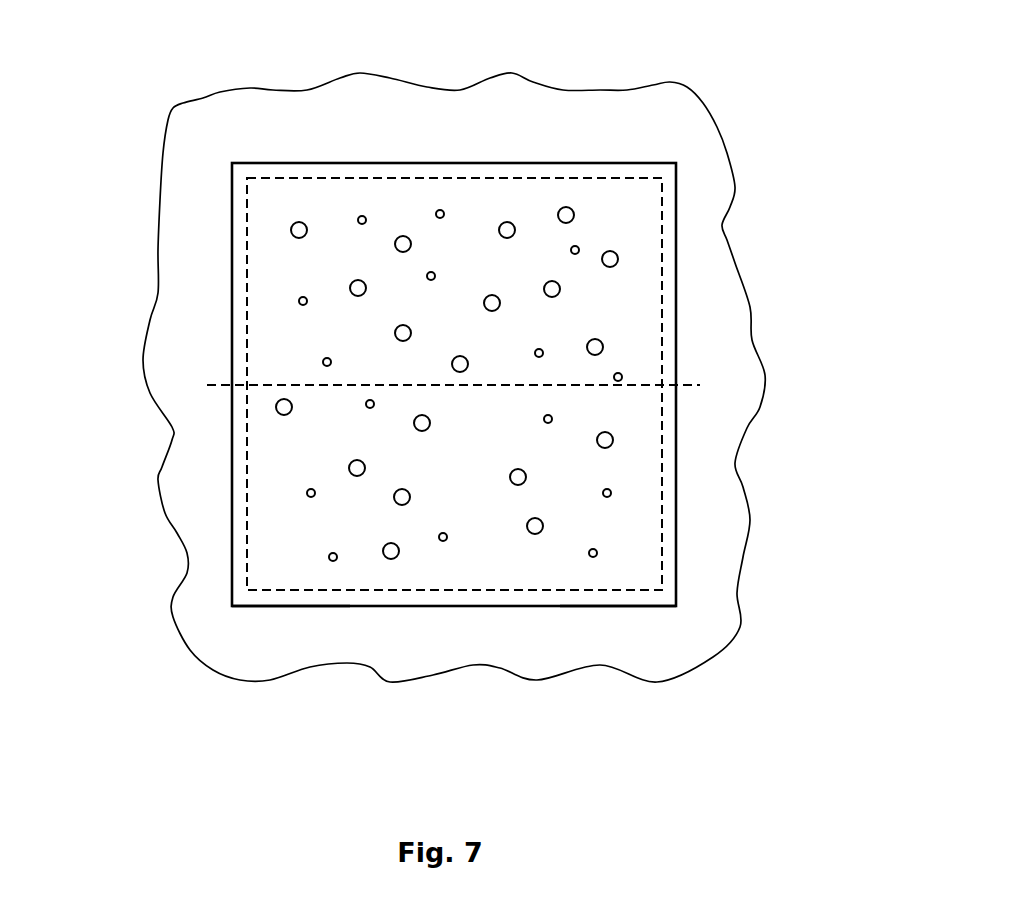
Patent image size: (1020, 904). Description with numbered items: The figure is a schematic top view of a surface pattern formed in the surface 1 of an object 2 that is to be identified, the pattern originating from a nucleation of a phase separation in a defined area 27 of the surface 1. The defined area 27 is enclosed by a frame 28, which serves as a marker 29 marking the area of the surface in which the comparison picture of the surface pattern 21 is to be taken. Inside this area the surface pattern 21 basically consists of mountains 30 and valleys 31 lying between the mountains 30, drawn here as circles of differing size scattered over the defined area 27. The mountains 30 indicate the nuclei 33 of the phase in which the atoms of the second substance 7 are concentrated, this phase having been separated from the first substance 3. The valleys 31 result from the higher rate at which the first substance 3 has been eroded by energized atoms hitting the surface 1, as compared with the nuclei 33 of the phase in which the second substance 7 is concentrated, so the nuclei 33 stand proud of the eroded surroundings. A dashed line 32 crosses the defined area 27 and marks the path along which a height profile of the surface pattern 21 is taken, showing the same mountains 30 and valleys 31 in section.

The surface 1 is at (702, 135).
The object 2 is at (583, 91).
The first substance 3 is at (470, 197).
The second substance 7 is at (299, 222).
The surface pattern 21 is at (622, 262).
The defined area 27 is at (663, 330).
The frame 28 is at (648, 607).
The marker 29 is at (278, 607).
The mountains 30 is at (389, 560).
The valleys 31 is at (292, 453).
The dashed line 32 is at (680, 385).
The nuclei 33 is at (364, 216).